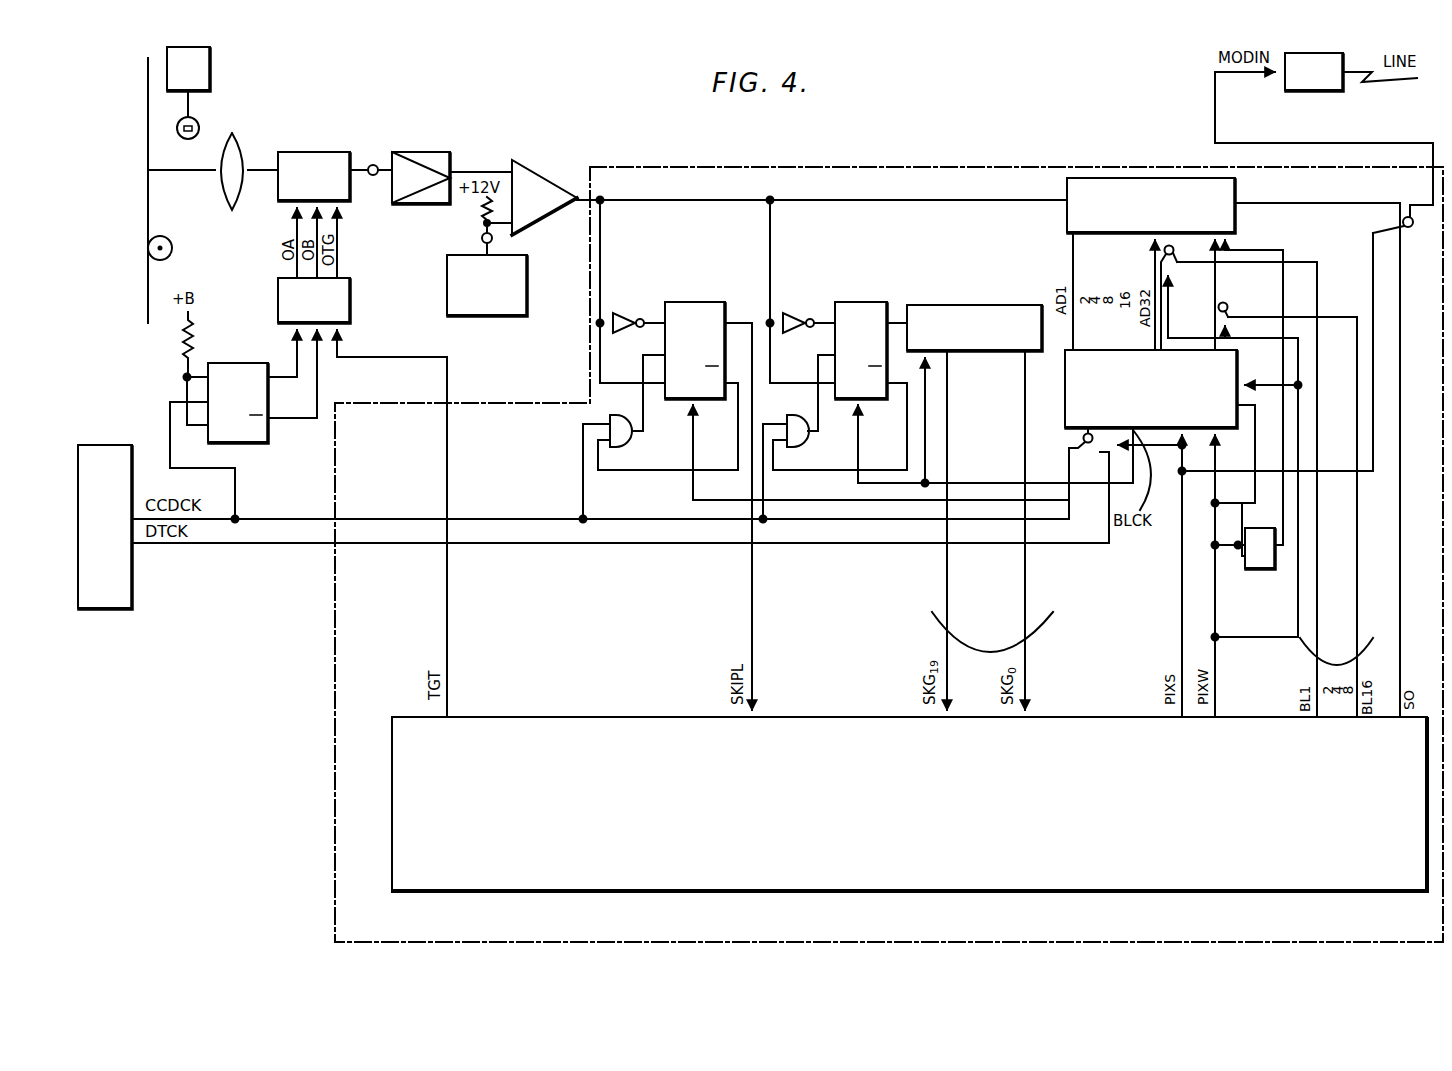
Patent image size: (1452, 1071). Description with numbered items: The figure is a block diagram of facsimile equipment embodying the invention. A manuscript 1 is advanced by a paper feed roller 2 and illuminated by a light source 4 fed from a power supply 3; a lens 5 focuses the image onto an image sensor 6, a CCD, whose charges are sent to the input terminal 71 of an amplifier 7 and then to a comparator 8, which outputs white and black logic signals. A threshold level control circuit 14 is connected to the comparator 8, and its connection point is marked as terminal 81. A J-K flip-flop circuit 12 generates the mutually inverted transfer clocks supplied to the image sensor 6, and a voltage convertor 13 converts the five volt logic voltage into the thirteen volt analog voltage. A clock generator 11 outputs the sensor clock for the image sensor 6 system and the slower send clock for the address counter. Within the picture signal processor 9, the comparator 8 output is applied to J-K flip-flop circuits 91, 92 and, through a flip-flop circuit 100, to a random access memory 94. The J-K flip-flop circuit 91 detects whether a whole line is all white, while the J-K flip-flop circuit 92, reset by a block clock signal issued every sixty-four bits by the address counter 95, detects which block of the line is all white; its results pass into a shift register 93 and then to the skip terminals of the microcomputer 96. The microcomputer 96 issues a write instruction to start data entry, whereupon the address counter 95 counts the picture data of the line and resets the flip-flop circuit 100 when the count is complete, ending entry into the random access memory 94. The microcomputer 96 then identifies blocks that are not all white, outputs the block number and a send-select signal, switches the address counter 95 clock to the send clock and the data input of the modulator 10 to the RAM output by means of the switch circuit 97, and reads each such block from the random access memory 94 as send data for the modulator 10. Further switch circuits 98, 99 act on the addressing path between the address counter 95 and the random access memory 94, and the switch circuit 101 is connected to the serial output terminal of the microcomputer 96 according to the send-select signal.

The manuscript 1 is at (145, 152).
The paper feed roller 2 is at (168, 240).
The power supply 3 is at (210, 78).
The light source 4 is at (199, 122).
The lens 5 is at (236, 137).
The image sensor 6 is at (320, 152).
The amplifier 7 is at (450, 160).
The input terminal 71 is at (373, 164).
The comparator 8 is at (543, 171).
The threshold terminal 81 is at (482, 236).
The picture signal processor 9 is at (960, 168).
The modulator 10 is at (1335, 90).
The clock generator 11 is at (132, 598).
The J-K flip-flop circuit 12 is at (268, 442).
The voltage convertor 13 is at (350, 312).
The threshold level control circuit 14 is at (508, 316).
The J-K flip-flop circuit 91 is at (725, 306).
The J-K flip-flop circuit 92 is at (837, 302).
The shift register 93 is at (960, 305).
The random access memory 94 is at (1235, 192).
The address counter 95 is at (1065, 397).
The microcomputer 96 is at (1062, 700).
The switch circuit 97 is at (1080, 463).
The switch circuit 98 is at (1174, 252).
The switch circuit 99 is at (1218, 309).
The flip-flop circuit 100 is at (1253, 568).
The switch circuit 101 is at (1395, 204).